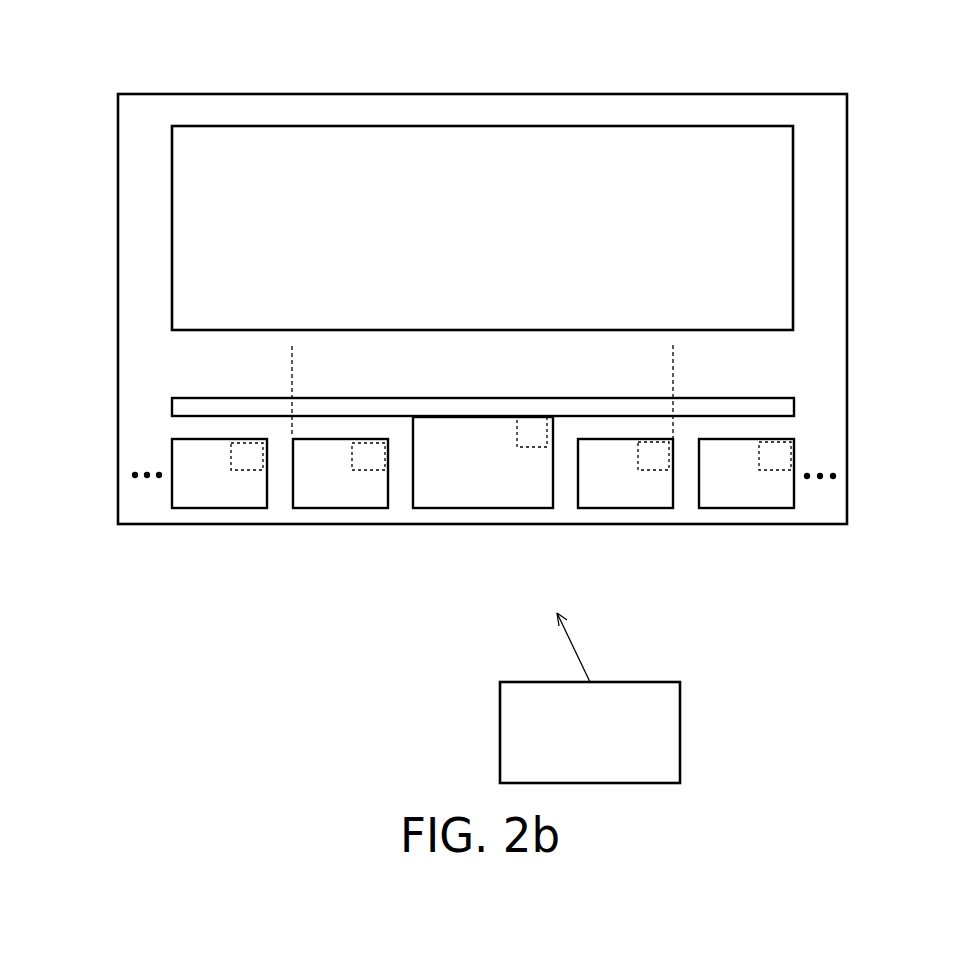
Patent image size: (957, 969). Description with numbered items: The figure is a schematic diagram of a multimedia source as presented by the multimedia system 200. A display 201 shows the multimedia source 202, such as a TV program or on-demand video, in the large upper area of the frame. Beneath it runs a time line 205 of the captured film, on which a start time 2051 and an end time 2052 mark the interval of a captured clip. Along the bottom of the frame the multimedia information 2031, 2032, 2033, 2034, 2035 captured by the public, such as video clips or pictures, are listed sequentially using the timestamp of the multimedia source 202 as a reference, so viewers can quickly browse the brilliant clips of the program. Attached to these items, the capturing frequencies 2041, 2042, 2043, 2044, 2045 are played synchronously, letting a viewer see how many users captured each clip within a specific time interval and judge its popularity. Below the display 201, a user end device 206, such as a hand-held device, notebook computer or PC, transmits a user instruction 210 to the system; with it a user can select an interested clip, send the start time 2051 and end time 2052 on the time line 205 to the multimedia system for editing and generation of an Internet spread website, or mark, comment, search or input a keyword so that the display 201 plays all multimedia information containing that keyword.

The multimedia system 200 is at (90, 34).
The display 201 is at (169, 93).
The multimedia source 202 is at (480, 152).
The time line 205 is at (168, 407).
The start time 2051 is at (290, 370).
The end time 2052 is at (676, 370).
The multimedia information 2031 is at (183, 508).
The multimedia information 2032 is at (309, 508).
The multimedia information 2033 is at (453, 508).
The multimedia information 2034 is at (604, 508).
The multimedia information 2035 is at (750, 508).
The capturing frequency 2041 is at (248, 472).
The capturing frequency 2042 is at (364, 472).
The capturing frequency 2043 is at (535, 449).
The capturing frequency 2044 is at (655, 472).
The capturing frequency 2045 is at (776, 472).
The user end device 206 is at (500, 733).
The user instruction 210 is at (596, 647).